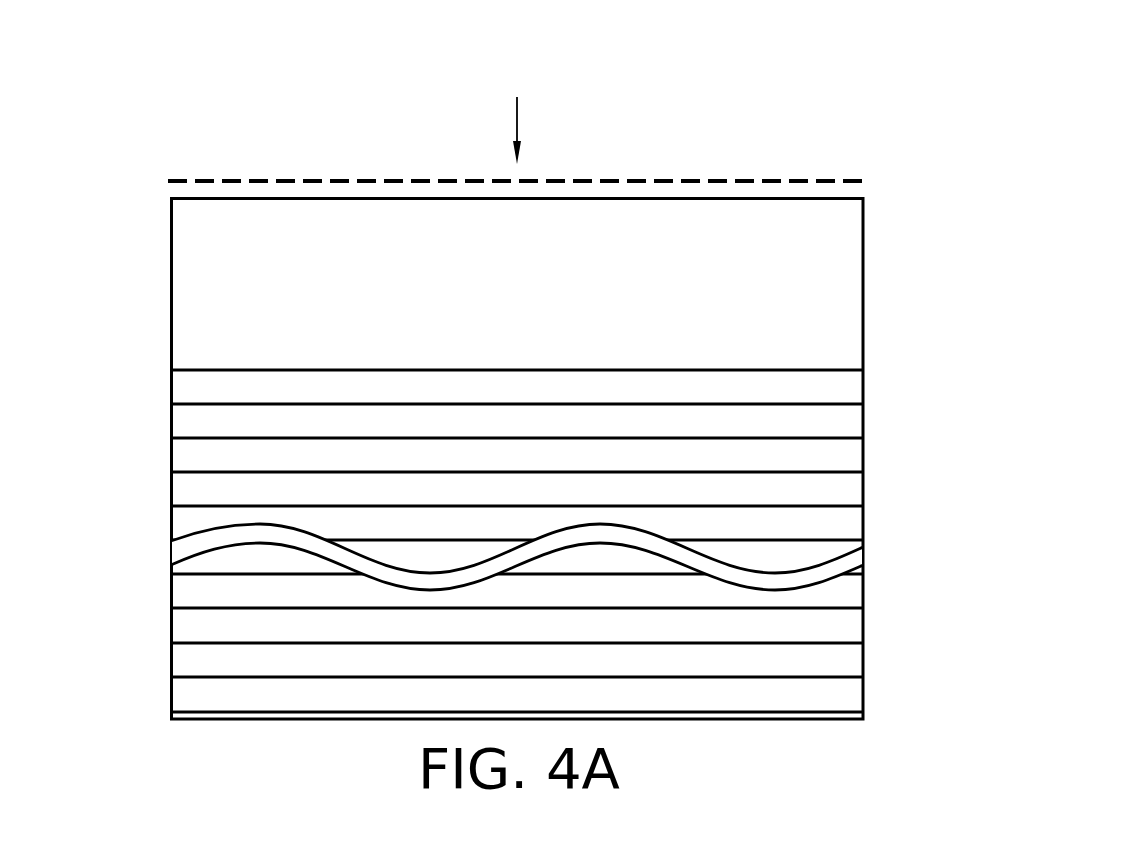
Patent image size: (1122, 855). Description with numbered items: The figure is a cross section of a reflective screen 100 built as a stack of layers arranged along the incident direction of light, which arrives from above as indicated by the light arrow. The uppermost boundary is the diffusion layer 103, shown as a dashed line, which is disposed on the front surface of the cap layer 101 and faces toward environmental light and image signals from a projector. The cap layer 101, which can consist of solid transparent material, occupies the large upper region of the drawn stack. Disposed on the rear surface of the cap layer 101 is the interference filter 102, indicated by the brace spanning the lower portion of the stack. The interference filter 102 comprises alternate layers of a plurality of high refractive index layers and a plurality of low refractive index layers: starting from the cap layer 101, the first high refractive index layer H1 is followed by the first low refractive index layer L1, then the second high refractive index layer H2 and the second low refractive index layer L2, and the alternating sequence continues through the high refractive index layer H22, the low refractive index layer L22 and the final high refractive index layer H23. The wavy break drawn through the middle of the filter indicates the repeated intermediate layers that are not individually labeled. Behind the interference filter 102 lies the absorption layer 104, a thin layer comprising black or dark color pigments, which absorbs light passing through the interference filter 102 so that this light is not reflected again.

The reflective screen 100 is at (198, 95).
The cap layer 101 is at (848, 283).
The interference filter 102 is at (1010, 375).
The diffusion layer 103 is at (865, 181).
The absorption layer 104 is at (853, 716).
The high refractive index layer H1 is at (850, 387).
The low refractive index layer L1 is at (850, 421).
The high refractive index layer H2 is at (850, 455).
The low refractive index layer L2 is at (850, 489).
The high refractive index layer H22 is at (850, 625).
The low refractive index layer L22 is at (850, 660).
The high refractive index layer H23 is at (850, 695).